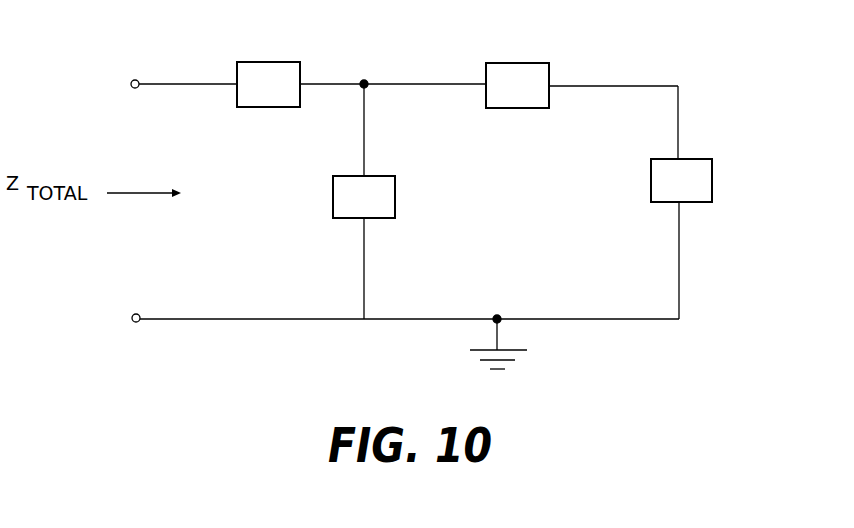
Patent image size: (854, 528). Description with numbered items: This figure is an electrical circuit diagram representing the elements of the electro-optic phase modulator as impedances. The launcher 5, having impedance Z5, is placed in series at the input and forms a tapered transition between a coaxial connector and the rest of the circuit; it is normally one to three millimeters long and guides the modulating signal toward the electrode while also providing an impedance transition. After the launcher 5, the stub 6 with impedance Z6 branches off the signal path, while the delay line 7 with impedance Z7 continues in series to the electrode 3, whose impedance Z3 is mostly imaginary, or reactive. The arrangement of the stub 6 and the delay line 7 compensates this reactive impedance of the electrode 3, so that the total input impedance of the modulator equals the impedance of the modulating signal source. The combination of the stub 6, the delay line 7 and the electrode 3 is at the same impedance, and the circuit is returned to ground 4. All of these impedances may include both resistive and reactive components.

The launcher 5 is at (270, 62).
The delay line 7 is at (517, 63).
The stub 6 is at (395, 193).
The electrode 3 is at (712, 182).
The ground 4 is at (522, 358).